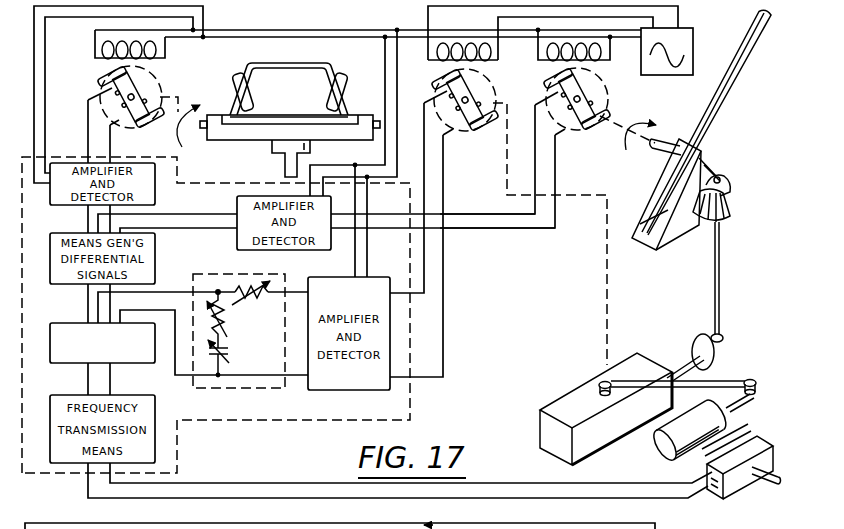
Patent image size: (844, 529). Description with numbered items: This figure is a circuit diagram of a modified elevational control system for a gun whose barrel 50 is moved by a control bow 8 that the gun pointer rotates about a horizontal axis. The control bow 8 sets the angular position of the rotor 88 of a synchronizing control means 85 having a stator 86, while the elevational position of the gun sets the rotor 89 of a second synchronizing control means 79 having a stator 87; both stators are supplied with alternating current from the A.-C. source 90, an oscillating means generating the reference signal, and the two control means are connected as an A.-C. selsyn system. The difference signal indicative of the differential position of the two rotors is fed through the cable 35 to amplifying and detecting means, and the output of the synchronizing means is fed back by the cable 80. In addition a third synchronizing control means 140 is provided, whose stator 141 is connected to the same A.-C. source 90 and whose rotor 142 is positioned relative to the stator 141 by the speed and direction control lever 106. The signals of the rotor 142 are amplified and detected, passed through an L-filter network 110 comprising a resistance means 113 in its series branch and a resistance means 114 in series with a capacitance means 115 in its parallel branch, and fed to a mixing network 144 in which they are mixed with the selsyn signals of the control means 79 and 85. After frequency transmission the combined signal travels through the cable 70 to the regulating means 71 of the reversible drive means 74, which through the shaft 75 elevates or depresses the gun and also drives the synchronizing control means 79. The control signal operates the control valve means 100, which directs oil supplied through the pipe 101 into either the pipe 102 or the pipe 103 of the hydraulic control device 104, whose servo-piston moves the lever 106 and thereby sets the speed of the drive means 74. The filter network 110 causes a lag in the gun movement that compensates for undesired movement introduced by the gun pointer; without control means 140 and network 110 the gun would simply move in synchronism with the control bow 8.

The control bow 8 is at (297, 64).
The cable 35 is at (108, 142).
The barrel 50 is at (728, 95).
The cable 70 is at (216, 499).
The regulating means 71 is at (754, 414).
The reversible drive means 74 is at (560, 400).
The shaft 75 is at (719, 301).
The synchronizing control means 79 is at (606, 73).
The cable 80 is at (495, 216).
The control means 85 is at (170, 80).
The stator 86 is at (96, 62).
The stator 87 is at (552, 66).
The rotor 88 is at (136, 120).
The rotor 89 is at (605, 127).
The A.-C. source 90 is at (688, 46).
The control valve means 100 is at (737, 485).
The pipe 101 is at (762, 482).
The pipe 102 is at (742, 440).
The pipe 103 is at (703, 456).
The hydraulic control device 104 is at (658, 452).
The speed and direction control lever 106 is at (725, 381).
The L-filter network 110 is at (218, 286).
The resistance means 113 is at (270, 300).
The resistance means 114 is at (228, 330).
The capacitance means 115 is at (230, 357).
The third synchronizing control means 140 is at (436, 76).
The stator 141 is at (426, 64).
The rotor 142 is at (484, 128).
The mixing network 144 is at (140, 362).